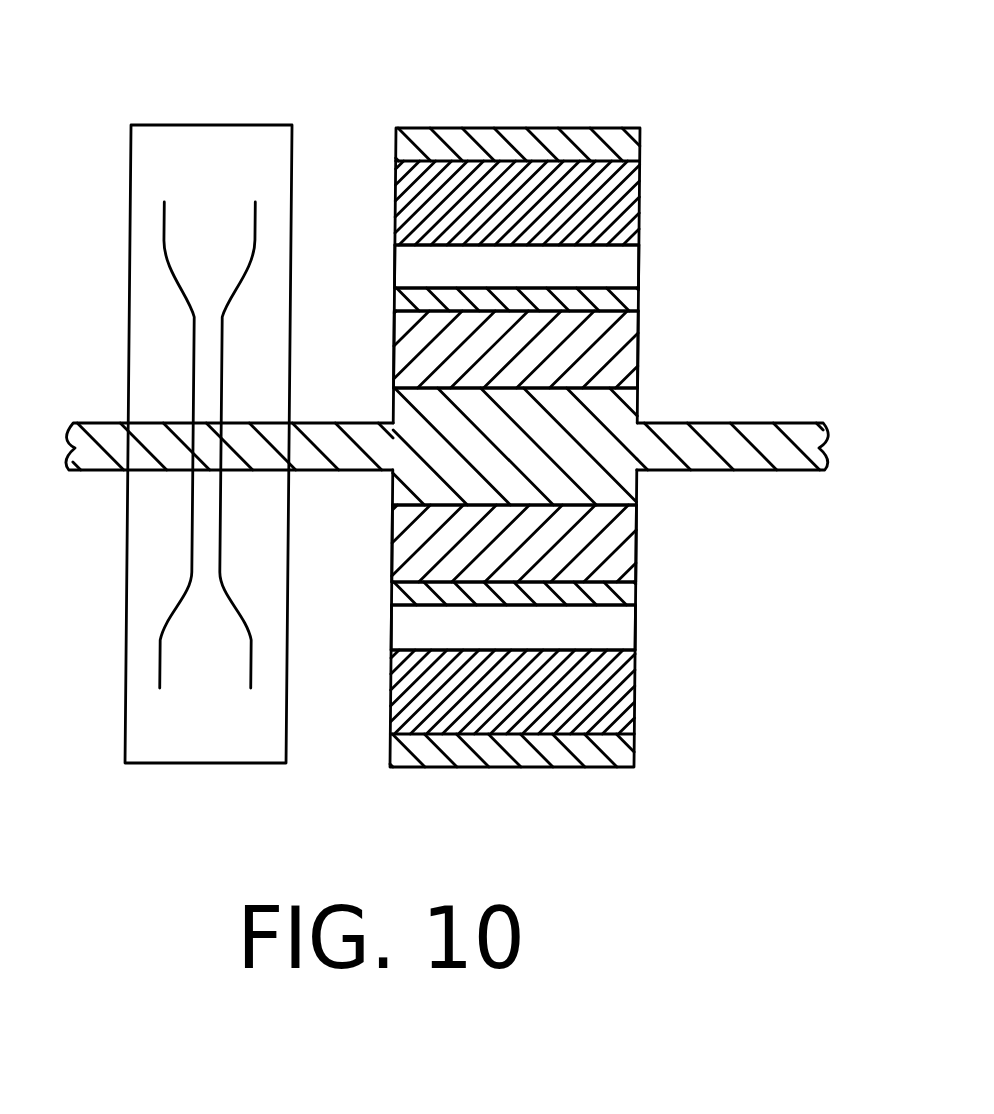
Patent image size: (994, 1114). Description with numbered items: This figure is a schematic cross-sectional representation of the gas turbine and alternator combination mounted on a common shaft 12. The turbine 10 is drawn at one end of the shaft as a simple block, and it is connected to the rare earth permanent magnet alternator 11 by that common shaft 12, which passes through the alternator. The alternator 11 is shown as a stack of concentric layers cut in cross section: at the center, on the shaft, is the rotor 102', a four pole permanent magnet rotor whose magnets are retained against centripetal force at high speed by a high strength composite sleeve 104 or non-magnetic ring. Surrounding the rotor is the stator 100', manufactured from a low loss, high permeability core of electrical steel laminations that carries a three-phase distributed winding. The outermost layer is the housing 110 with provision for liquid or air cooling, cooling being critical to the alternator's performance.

The turbine 10 is at (224, 120).
The rare earth permanent magnet alternator 11 is at (656, 325).
The common shaft 12 is at (712, 460).
The housing with provision for liquid or air cooling 110 is at (570, 128).
The stator 100' is at (588, 447).
The high strength composite sleeve 104 is at (613, 290).
The rotor 102' is at (591, 446).